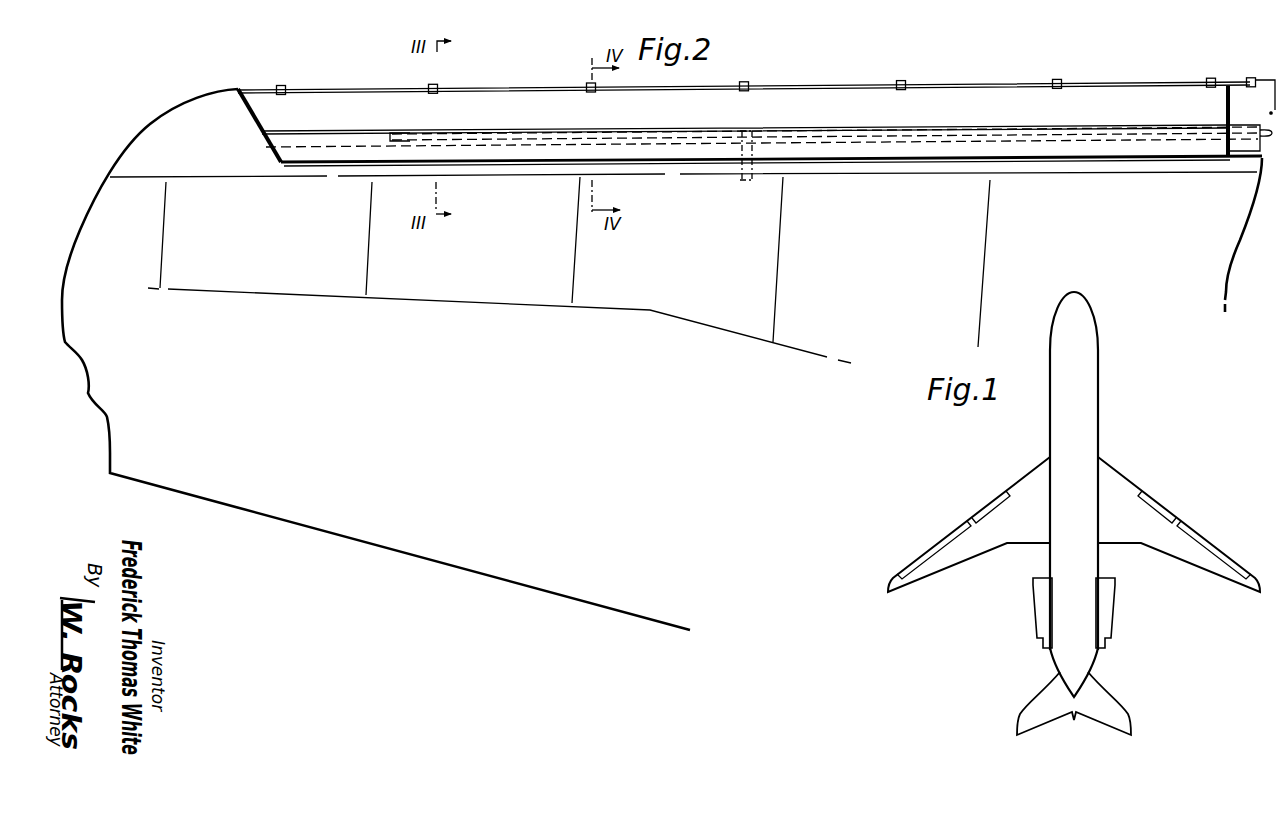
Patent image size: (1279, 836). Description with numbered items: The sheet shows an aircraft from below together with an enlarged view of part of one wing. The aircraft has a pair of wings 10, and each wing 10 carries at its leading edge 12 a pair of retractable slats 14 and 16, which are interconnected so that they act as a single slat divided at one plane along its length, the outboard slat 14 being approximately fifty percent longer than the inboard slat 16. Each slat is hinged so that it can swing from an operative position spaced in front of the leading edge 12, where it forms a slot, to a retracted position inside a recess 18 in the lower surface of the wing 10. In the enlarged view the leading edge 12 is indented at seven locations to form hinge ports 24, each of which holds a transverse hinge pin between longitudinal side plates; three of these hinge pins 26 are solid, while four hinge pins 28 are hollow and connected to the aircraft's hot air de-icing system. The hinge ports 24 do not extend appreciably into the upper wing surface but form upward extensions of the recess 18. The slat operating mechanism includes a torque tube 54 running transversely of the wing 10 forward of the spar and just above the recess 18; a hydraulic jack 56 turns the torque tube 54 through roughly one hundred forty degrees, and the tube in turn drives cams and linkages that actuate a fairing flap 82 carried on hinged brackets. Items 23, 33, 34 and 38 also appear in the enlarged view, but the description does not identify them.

In FIG. 2, the wing 10 is at (172, 120).
In FIG. 1, the wing 10 is at (985, 543).
In FIG. 2, the leading edge 12 is at (216, 88).
In FIG. 1, the leading edge 12 is at (1025, 477).
In FIG. 2, the outboard slat 14 is at (364, 104).
In FIG. 1, the outboard slat 14 is at (917, 543).
In FIG. 1, the inboard slat 16 is at (978, 510).
In FIG. 2, the recess 18 is at (252, 117).
In FIG. 2, the slat track 23 is at (590, 93).
In FIG. 2, the hinge ports 24 is at (284, 86).
In FIG. 2, the solid hinge pins 26 is at (434, 94).
In FIG. 2, the hollow hinge pins 28 is at (282, 95).
In FIG. 2, the slat track 33 is at (592, 83).
In FIG. 2, the pivot pin 34 is at (437, 88).
In FIG. 2, the support bracket 38 is at (280, 86).
In FIG. 2, the torque tube 54 is at (457, 137).
In FIG. 2, the hydraulic jack 56 is at (740, 164).
In FIG. 2, the fairing flap 82 is at (280, 138).